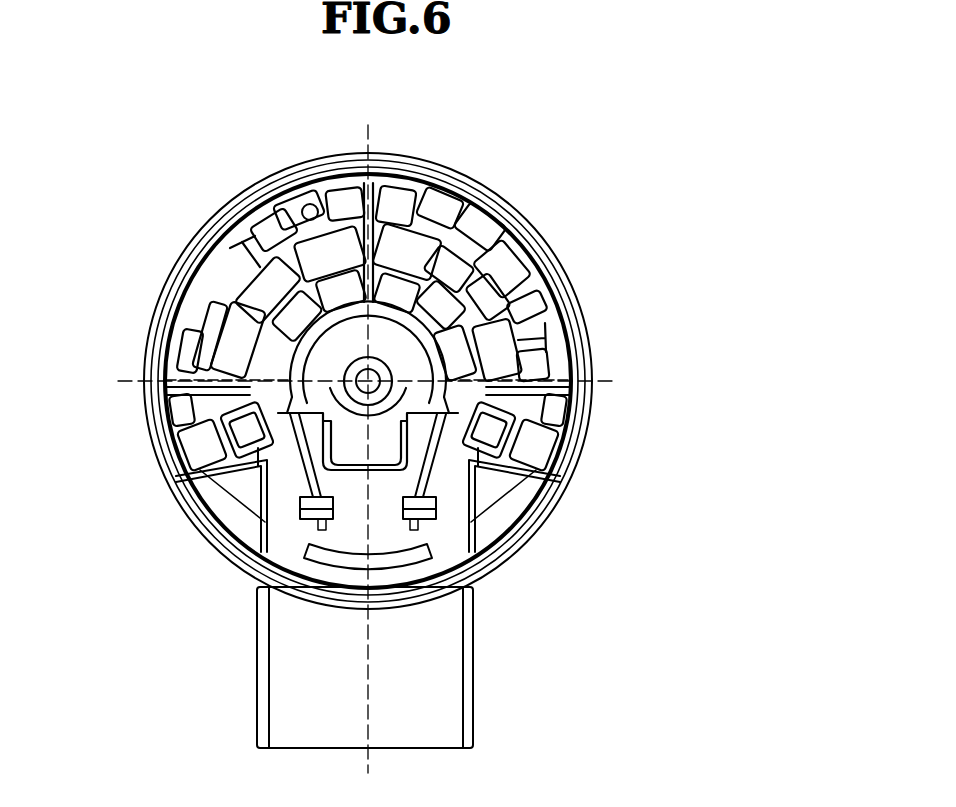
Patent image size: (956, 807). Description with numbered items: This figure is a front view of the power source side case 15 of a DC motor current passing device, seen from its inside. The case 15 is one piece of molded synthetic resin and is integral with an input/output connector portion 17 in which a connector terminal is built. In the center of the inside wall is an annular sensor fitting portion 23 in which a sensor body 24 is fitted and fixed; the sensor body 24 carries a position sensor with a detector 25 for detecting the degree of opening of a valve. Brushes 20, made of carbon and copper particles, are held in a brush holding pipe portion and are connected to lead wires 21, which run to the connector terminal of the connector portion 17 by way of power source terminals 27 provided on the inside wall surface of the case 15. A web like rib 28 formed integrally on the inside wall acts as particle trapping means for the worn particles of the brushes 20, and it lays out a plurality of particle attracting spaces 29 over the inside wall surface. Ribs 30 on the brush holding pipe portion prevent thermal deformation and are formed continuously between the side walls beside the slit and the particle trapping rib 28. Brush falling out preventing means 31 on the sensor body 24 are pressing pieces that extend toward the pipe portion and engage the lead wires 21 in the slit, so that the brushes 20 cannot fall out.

The power source side case 15 is at (298, 158).
The input/output connector portion 17 is at (427, 703).
The brush 20 is at (212, 440).
The lead wire 21 is at (300, 512).
The sensor fitting portion 23 is at (343, 227).
The sensor body 24 is at (400, 353).
The detector 25 is at (420, 357).
The power source terminal 27 is at (262, 566).
The web like rib 28 is at (270, 297).
The particle attracting space 29 is at (233, 332).
The rib 30 is at (200, 387).
The brush falling out preventing means 31 is at (212, 362).